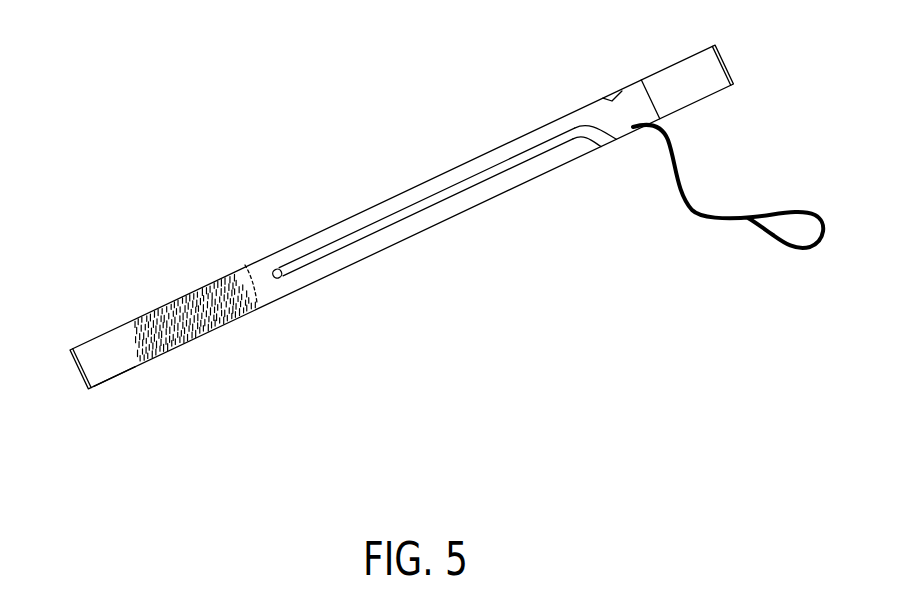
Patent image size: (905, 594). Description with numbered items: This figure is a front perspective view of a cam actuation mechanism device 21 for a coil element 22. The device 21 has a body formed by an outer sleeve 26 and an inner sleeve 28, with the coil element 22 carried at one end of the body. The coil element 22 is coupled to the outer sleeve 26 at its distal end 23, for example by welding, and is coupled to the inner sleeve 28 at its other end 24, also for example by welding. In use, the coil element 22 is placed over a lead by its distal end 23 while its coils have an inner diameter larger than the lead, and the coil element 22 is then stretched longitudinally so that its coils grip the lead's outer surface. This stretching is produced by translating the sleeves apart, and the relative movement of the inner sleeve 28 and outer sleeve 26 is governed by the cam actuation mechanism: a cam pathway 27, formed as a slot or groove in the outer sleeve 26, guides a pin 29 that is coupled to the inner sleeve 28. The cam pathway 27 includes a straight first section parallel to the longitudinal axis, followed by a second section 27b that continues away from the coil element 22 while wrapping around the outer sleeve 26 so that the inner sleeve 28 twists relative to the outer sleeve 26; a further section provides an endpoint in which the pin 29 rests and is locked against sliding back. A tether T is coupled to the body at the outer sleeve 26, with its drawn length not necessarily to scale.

The cam actuation mechanism device 21 is at (462, 310).
The coil element 22 is at (183, 293).
The end 23 is at (128, 351).
The end 24 is at (245, 265).
The outer sleeve 26 is at (103, 384).
The cam pathway 27 is at (362, 228).
The second section 27b is at (600, 143).
The inner sleeve 28 is at (690, 93).
The pin 29 is at (279, 268).
The tether T is at (700, 221).